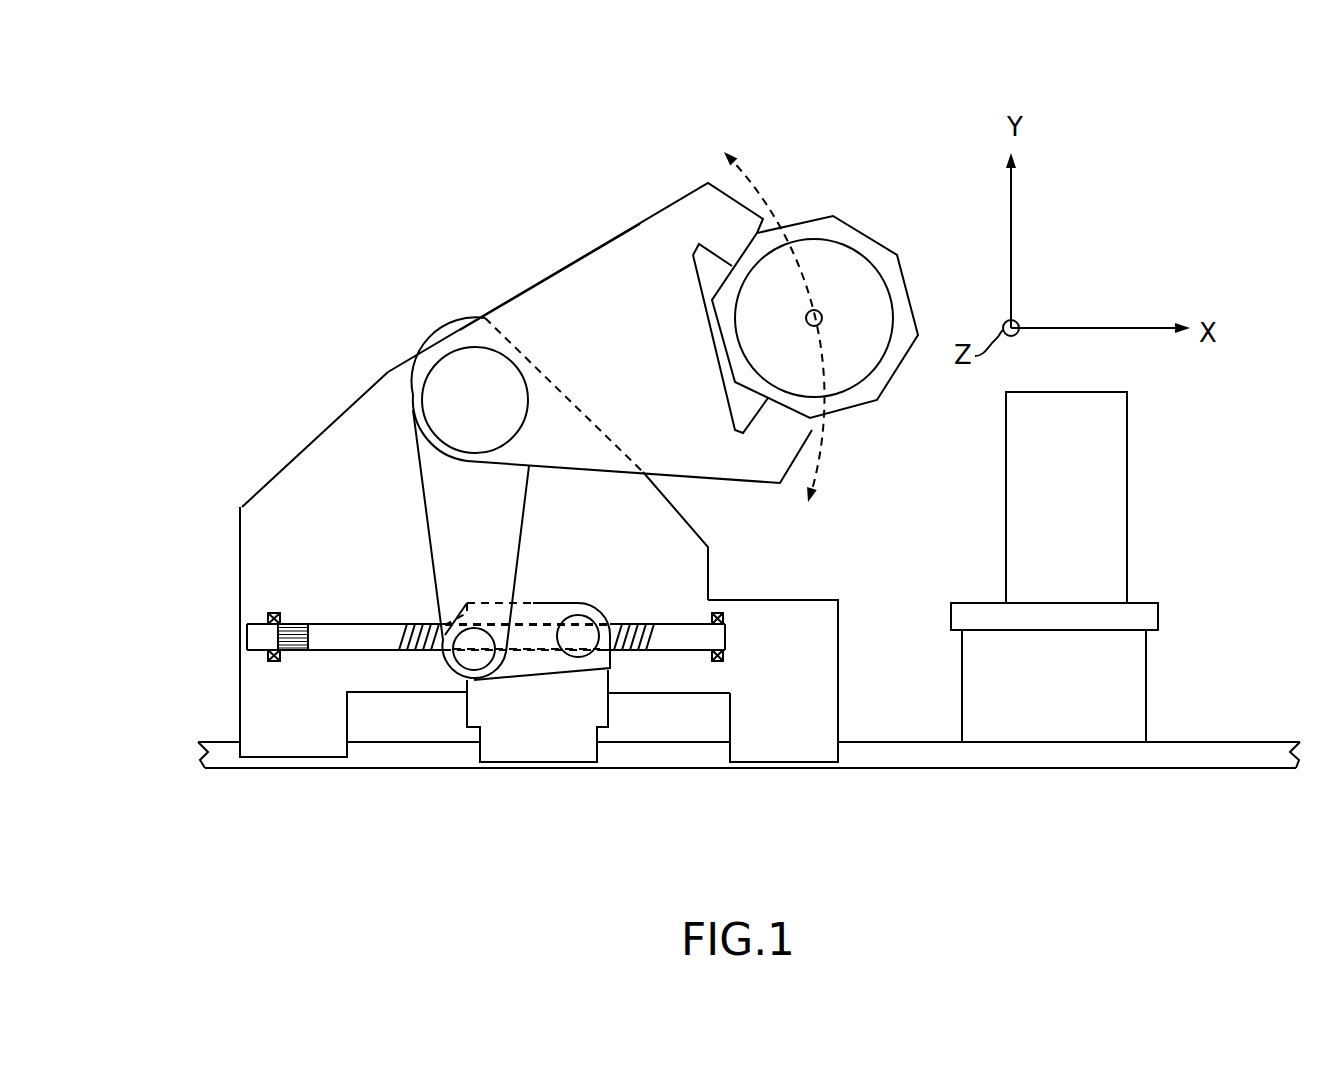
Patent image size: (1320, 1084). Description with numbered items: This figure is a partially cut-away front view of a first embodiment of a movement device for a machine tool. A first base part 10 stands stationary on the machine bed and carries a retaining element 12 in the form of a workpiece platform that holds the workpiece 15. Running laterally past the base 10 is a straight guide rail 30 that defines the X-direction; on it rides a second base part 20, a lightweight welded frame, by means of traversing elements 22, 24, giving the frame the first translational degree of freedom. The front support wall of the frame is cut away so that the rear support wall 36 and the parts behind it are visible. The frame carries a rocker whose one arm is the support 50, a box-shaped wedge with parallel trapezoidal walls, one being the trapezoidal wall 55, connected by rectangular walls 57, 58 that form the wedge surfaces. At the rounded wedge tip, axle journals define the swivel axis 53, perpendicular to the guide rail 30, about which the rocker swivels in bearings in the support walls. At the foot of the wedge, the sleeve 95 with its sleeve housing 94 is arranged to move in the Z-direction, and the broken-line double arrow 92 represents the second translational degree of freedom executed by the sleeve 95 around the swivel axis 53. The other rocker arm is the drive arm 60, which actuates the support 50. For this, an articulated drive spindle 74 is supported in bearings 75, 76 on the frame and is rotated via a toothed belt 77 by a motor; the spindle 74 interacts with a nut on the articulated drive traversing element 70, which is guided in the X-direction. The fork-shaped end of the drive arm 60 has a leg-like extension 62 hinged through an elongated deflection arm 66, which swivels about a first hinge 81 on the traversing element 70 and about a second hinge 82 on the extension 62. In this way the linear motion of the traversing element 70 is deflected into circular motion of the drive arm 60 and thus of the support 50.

The first base part 10 is at (1125, 696).
The retaining element 12 is at (1147, 620).
The workpiece 15 is at (1112, 438).
The second base part 20 is at (690, 592).
The traversing element 22 is at (766, 748).
The traversing element 24 is at (293, 745).
The guide rail 30 is at (918, 769).
The support wall 36 is at (306, 485).
The support 50 is at (580, 198).
The swivel axis 53 is at (470, 397).
The trapezoidal wall 55 is at (600, 303).
The rectangular wall 57 is at (636, 220).
The rectangular wall 58 is at (731, 489).
The drive arm 60 is at (443, 493).
The leg-like extension 62 is at (445, 612).
The first deflection arm 66 is at (534, 663).
The articulated drive traversing element 70 is at (517, 738).
The articulated drive spindle 74 is at (670, 640).
The bearing 75 is at (718, 660).
The bearing 76 is at (275, 656).
The toothed belt 77 is at (297, 648).
The first hinge 81 is at (578, 640).
The second hinge 82 is at (462, 656).
The double arrow 92 is at (758, 190).
The sleeve housing 94 is at (806, 228).
The sleeve 95 is at (825, 316).